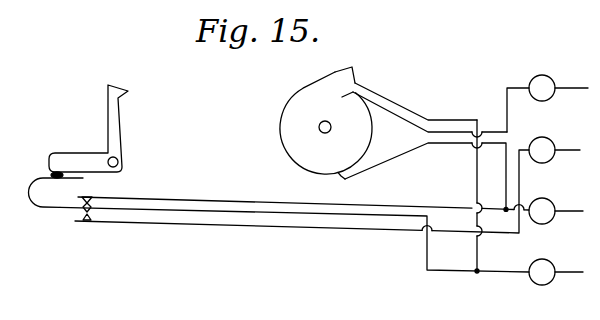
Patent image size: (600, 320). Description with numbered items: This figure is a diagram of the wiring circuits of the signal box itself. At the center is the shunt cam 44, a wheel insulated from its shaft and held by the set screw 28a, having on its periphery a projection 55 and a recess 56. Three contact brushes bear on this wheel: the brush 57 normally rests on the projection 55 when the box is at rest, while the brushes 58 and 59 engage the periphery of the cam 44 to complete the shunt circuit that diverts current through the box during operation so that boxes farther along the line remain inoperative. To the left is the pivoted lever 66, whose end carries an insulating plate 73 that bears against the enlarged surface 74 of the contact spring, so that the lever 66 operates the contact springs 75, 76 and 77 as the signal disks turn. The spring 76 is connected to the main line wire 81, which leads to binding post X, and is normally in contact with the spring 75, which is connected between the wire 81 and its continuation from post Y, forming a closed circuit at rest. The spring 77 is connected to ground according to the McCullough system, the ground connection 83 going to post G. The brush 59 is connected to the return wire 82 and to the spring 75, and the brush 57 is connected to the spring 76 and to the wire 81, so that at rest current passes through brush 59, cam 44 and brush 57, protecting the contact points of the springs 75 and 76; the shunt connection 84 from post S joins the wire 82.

The set screw 28a is at (319, 127).
The shunt cam 44 is at (326, 125).
The projection 55 is at (339, 72).
The recess 56 is at (345, 98).
The contact brush 57 is at (385, 97).
The contact brush 58 is at (392, 113).
The contact brush 59 is at (388, 161).
The lever 66 is at (110, 116).
The insulating plate 73 is at (50, 175).
The enlarged surface of spring 74 is at (66, 179).
The contact spring 75 is at (300, 201).
The contact spring 76 is at (279, 212).
The contact spring 77 is at (312, 229).
The main line wire 81 is at (574, 274).
The return wire 82 is at (573, 213).
The ground connection 83 is at (575, 151).
The shunt connection 84 is at (575, 89).